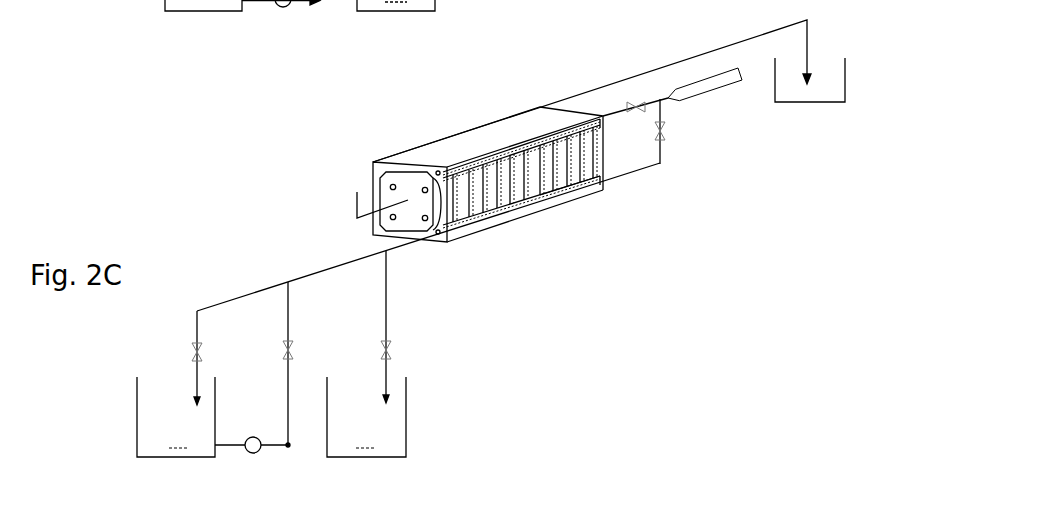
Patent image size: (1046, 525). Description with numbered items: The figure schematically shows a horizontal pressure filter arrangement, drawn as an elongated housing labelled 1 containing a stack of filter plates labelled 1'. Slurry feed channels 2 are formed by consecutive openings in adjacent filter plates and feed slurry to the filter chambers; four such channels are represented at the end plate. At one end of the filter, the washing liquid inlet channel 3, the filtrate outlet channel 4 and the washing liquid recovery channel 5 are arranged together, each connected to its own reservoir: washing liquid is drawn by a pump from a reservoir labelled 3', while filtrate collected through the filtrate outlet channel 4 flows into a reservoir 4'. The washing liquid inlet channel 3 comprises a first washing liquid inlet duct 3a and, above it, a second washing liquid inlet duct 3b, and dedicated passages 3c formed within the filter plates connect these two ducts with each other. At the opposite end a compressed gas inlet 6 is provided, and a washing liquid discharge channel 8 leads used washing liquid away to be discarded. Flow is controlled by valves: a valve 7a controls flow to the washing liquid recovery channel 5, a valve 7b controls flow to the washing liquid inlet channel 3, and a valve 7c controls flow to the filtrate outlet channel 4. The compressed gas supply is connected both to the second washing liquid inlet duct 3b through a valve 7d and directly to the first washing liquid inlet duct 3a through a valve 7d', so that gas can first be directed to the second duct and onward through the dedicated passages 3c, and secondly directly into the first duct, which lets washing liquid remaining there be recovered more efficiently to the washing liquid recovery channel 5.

The treatment apparatus 1 is at (607, 259).
The plates 1' is at (525, 142).
The slurry feed channel 2 is at (357, 192).
The washing liquid inlet channel 3 is at (252, 367).
The first liquid reservoir 3' is at (176, 417).
The first washing liquid inlet duct 3a is at (498, 219).
The second washing liquid inlet duct 3b is at (494, 156).
The dedicated passages 3c is at (560, 189).
The filtrate outlet channel 4 is at (428, 327).
The reservoir 4' is at (366, 417).
The washing liquid recovery channel 5 is at (197, 378).
The compressed gas inlet 6 is at (670, 99).
The valve 7a is at (193, 348).
The valve 7b is at (287, 348).
The valve 7c is at (388, 352).
The valve 7d is at (640, 166).
The valve 7d' is at (694, 186).
The washing liquid discharge channel 8 is at (697, 55).